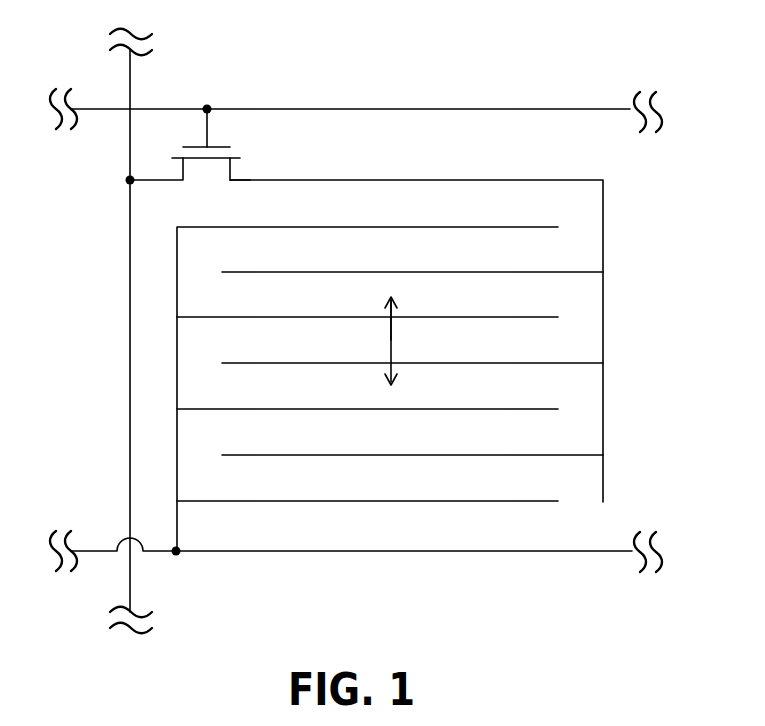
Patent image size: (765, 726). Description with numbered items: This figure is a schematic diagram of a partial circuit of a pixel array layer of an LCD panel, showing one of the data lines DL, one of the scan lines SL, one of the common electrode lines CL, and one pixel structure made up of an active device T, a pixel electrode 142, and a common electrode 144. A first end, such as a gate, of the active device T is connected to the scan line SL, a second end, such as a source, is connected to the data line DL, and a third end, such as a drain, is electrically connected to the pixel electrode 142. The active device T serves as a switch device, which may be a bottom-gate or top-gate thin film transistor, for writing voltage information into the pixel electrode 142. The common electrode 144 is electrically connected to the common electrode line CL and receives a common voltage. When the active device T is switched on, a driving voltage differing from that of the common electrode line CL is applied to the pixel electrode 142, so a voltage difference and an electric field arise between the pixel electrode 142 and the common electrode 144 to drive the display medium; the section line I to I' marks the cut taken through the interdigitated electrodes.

The data line DL is at (130, 320).
The scan line SL is at (355, 109).
The common electrode line CL is at (478, 553).
The active device T is at (244, 149).
The pixel electrode 142 is at (603, 422).
The common electrode 144 is at (177, 437).
The section line I is at (398, 352).
The section line I' is at (402, 307).